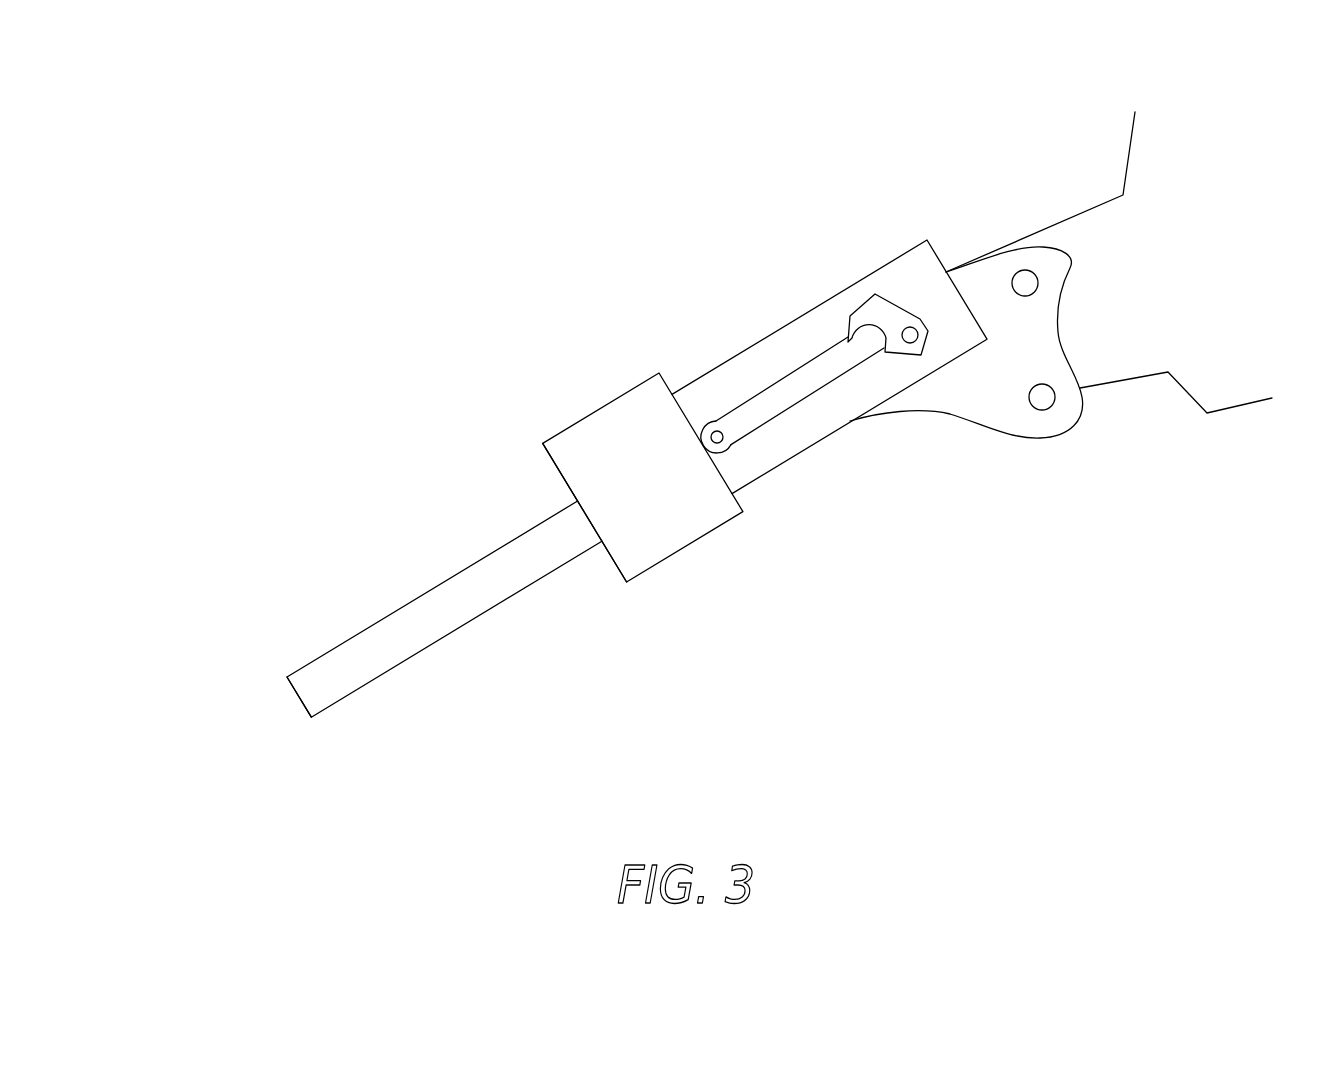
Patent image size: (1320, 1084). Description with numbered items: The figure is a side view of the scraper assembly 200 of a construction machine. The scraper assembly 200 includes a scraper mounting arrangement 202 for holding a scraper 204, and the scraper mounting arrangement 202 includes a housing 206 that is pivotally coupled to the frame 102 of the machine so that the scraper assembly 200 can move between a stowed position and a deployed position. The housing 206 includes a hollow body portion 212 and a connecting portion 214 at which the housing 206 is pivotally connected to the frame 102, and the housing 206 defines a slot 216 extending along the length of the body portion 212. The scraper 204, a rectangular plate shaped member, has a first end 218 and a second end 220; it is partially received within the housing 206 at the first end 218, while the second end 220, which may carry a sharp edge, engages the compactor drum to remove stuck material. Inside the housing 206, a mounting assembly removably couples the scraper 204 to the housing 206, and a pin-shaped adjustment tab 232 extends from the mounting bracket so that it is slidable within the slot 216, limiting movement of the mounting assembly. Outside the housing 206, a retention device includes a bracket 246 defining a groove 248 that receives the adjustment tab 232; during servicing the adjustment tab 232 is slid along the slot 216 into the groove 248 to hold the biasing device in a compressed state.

The frame 102 is at (1102, 237).
The scraper assembly 200 is at (268, 667).
The scraper mounting arrangement 202 is at (550, 415).
The scraper 204 is at (375, 662).
The housing 206 is at (829, 330).
The body portion 212 is at (787, 338).
The connecting portion 214 is at (1048, 357).
The slot 216 is at (782, 428).
The first end 218 is at (593, 578).
The second end 220 is at (280, 708).
The adjustment tab 232 is at (714, 426).
The bracket 246 is at (903, 356).
The groove 248 is at (903, 413).